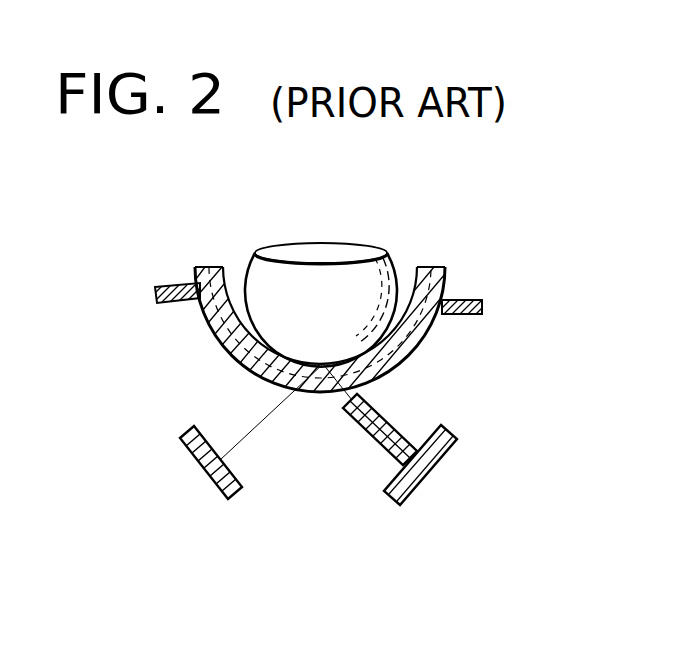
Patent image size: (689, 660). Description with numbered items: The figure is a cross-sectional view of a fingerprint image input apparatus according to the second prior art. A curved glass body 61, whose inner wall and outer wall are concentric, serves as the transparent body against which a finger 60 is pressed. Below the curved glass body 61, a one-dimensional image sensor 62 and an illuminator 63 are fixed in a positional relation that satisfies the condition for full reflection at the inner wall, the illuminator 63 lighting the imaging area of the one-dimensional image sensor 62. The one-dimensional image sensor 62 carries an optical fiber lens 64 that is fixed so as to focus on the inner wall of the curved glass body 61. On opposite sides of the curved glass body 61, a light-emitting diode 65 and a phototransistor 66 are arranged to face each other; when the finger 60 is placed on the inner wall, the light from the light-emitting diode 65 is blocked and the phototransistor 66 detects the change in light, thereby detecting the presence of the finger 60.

The finger 60 is at (395, 272).
The curved glass body 61 is at (445, 275).
The one-dimensional image sensor 62 is at (448, 458).
The illuminator 63 is at (186, 448).
The optical fiber lens 64 is at (388, 410).
The light-emitting diode 65 is at (482, 307).
The phototransistor 66 is at (155, 295).